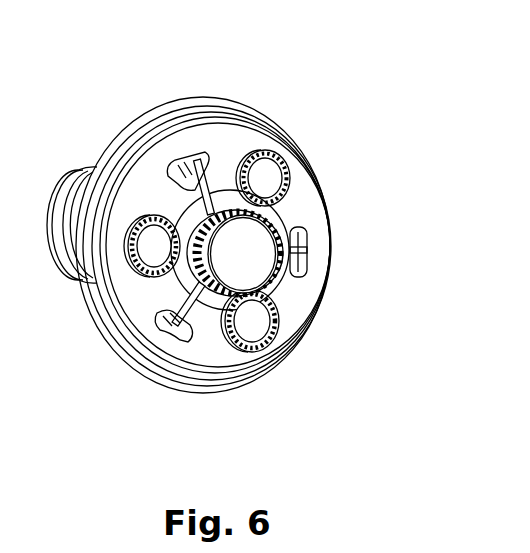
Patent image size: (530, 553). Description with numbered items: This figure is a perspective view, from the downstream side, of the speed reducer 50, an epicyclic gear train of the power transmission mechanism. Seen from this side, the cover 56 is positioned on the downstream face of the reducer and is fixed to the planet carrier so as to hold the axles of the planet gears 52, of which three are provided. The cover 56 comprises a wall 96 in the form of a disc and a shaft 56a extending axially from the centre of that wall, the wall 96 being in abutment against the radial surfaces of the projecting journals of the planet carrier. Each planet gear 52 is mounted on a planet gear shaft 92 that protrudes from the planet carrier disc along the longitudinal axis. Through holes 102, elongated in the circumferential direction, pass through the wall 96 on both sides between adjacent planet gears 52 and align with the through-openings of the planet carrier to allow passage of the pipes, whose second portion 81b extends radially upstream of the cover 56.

The speed reducer 50 is at (336, 76).
The planet gears 52 is at (260, 150).
The cover 56 is at (300, 198).
The shaft 56a is at (232, 263).
The second portion 81b is at (214, 183).
The planet gear shafts 92 is at (257, 322).
The wall 96 is at (318, 299).
The through holes 102 is at (192, 158).